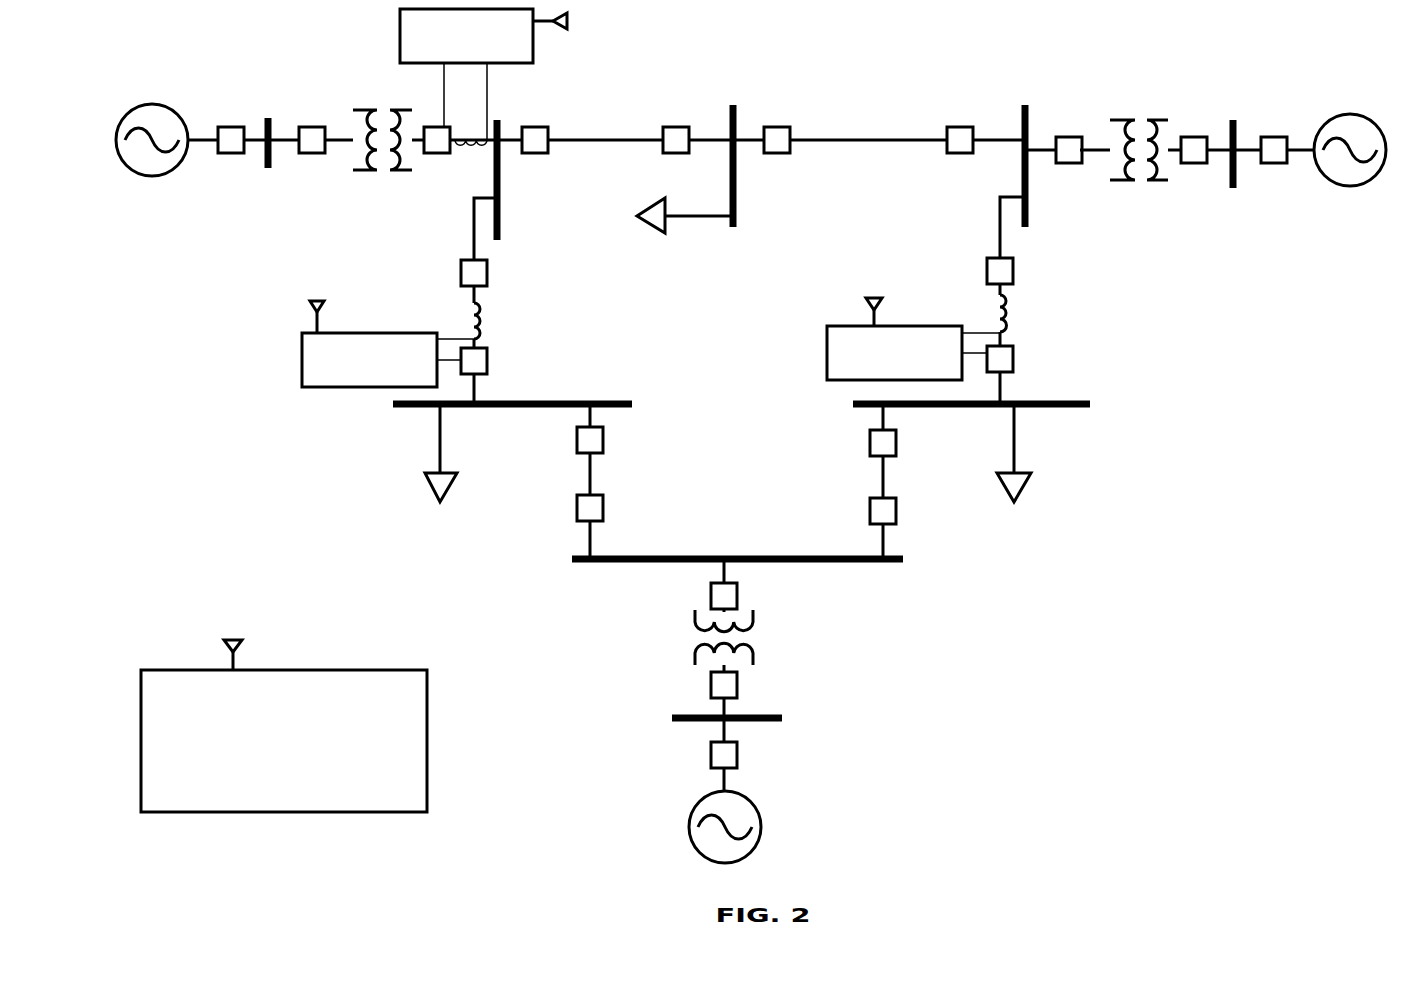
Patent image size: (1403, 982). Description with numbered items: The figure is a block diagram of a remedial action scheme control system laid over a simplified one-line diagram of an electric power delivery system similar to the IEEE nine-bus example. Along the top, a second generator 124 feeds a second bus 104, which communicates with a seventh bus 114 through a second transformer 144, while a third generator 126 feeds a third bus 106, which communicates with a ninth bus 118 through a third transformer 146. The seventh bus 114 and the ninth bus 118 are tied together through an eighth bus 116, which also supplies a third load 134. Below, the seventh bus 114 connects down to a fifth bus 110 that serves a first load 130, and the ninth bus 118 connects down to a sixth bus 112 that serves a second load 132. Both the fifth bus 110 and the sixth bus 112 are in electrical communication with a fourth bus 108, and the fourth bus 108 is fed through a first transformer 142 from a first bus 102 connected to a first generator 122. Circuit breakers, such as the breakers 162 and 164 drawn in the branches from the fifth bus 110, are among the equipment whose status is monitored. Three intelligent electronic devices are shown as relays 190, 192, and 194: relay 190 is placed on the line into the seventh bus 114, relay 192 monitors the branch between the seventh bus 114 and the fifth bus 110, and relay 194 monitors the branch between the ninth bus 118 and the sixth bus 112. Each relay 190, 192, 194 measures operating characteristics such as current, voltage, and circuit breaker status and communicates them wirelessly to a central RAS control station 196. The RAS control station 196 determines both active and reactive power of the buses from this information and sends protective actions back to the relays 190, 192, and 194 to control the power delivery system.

The first bus 102 is at (762, 720).
The second bus 104 is at (268, 118).
The third bus 106 is at (1233, 120).
The fourth bus 108 is at (835, 562).
The fifth bus 110 is at (410, 407).
The sixth bus 112 is at (1065, 406).
The seventh bus 114 is at (497, 120).
The eighth bus 116 is at (733, 105).
The ninth bus 118 is at (1025, 105).
The first generator 122 is at (689, 832).
The second generator 124 is at (172, 176).
The third generator 126 is at (1352, 186).
The first load 130 is at (428, 482).
The second load 132 is at (1026, 482).
The third load 134 is at (660, 232).
The first transformer 142 is at (755, 622).
The second transformer 144 is at (395, 110).
The third transformer 146 is at (1130, 120).
The circuit breaker 162 is at (487, 365).
The circuit breaker 164 is at (603, 440).
The relay 190 is at (400, 37).
The relay 192 is at (302, 368).
The relay 194 is at (827, 358).
The RAS control station 196 is at (385, 670).